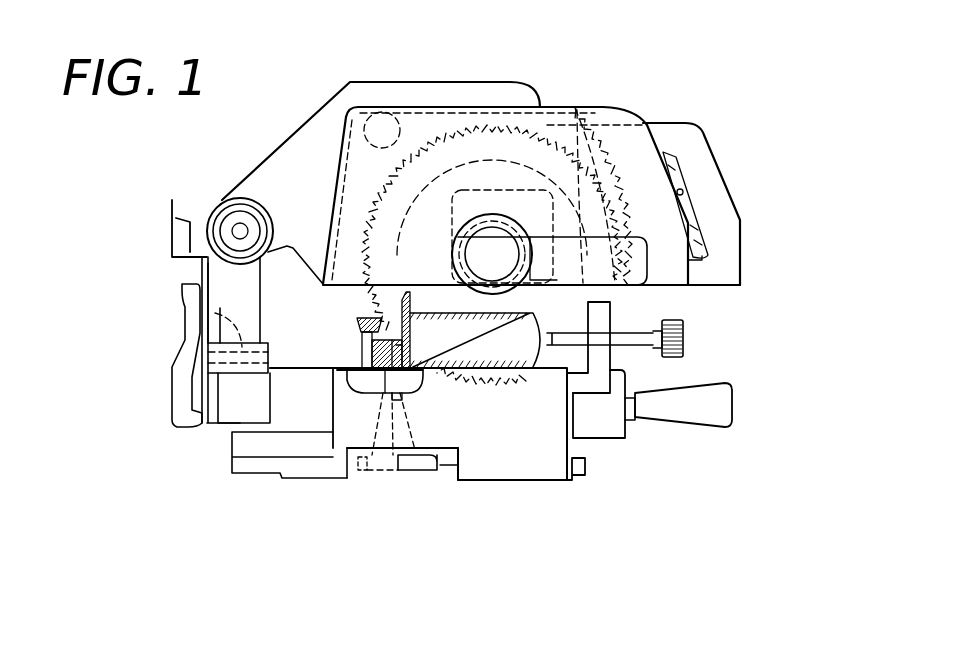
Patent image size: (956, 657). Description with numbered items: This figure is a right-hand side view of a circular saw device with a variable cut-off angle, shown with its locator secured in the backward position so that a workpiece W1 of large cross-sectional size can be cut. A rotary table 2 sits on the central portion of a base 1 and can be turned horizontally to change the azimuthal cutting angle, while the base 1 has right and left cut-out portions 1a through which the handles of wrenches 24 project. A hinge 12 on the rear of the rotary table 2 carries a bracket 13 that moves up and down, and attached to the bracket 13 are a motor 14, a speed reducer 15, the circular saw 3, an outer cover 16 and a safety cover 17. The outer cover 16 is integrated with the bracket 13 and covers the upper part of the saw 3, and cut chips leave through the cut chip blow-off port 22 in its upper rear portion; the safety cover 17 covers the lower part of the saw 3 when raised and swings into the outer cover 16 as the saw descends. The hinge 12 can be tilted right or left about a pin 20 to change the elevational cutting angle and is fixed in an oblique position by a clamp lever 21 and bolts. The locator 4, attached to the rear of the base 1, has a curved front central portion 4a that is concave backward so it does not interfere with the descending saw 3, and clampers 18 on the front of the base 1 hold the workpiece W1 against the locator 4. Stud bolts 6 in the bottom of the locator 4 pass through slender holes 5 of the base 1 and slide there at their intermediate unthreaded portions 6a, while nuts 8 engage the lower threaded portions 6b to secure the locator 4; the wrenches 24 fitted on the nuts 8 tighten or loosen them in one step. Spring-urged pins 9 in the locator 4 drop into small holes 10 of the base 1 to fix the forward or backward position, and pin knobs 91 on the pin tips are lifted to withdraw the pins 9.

The base 1 is at (543, 467).
The cut-out portions 1a is at (450, 467).
The rotary table 2 is at (613, 435).
The circular saw 3 is at (360, 295).
The locator 4 is at (396, 300).
The curved front central portion 4a is at (340, 353).
The slender holes 5 is at (408, 367).
The stud bolts 6 is at (423, 295).
The intermediate unthreaded portions 6a is at (368, 455).
The lower threaded portions 6b is at (393, 483).
The nuts 8 is at (412, 378).
The pins 9 is at (363, 387).
The small holes 10 is at (342, 373).
The hinge 12 is at (223, 268).
The bracket 13 is at (313, 135).
The motor 14 is at (464, 160).
The speed reducer 15 is at (490, 190).
The outer cover 16 is at (602, 107).
The safety cover 17 is at (577, 110).
The clampers 18 is at (637, 327).
The pin 20 is at (197, 303).
The clamp lever 21 is at (177, 368).
The cut chip blow-off port 22 is at (383, 118).
The wrenches 24 is at (427, 473).
The pin knobs 91 is at (360, 320).
The workpiece W1 is at (515, 327).